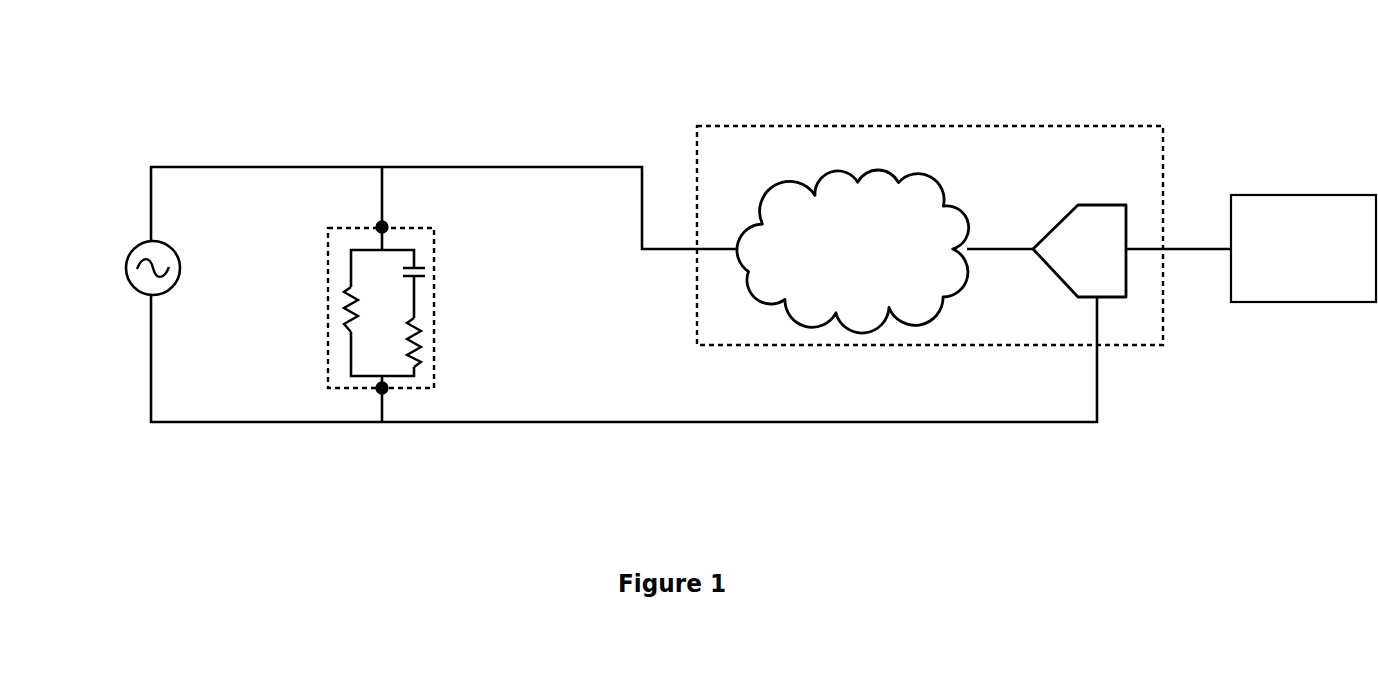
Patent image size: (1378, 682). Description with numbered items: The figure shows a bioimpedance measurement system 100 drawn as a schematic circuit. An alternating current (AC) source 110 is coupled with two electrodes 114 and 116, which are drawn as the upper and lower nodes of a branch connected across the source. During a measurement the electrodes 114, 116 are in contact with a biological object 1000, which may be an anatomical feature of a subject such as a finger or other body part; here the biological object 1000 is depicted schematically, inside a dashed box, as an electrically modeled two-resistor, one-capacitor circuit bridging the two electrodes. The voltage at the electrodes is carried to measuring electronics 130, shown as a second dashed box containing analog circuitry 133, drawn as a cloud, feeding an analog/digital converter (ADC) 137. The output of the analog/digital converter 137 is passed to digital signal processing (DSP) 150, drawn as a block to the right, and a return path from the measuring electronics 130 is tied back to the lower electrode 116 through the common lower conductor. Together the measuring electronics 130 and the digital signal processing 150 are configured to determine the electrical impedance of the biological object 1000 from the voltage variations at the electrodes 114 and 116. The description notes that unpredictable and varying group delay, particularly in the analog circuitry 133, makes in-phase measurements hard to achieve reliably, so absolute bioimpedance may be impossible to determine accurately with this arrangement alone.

The bioimpedance measurement system 100 is at (100, 80).
The alternating current (AC) source 110 is at (144, 242).
The electrode 114 is at (384, 190).
The electrode 116 is at (381, 398).
The biological object 1000 is at (434, 337).
The measuring electronics 130 is at (1006, 126).
The analog circuitry 133 is at (853, 251).
The analog/digital converter (ADC) 137 is at (1079, 251).
The digital signal processing (DSP) 150 is at (1303, 248).